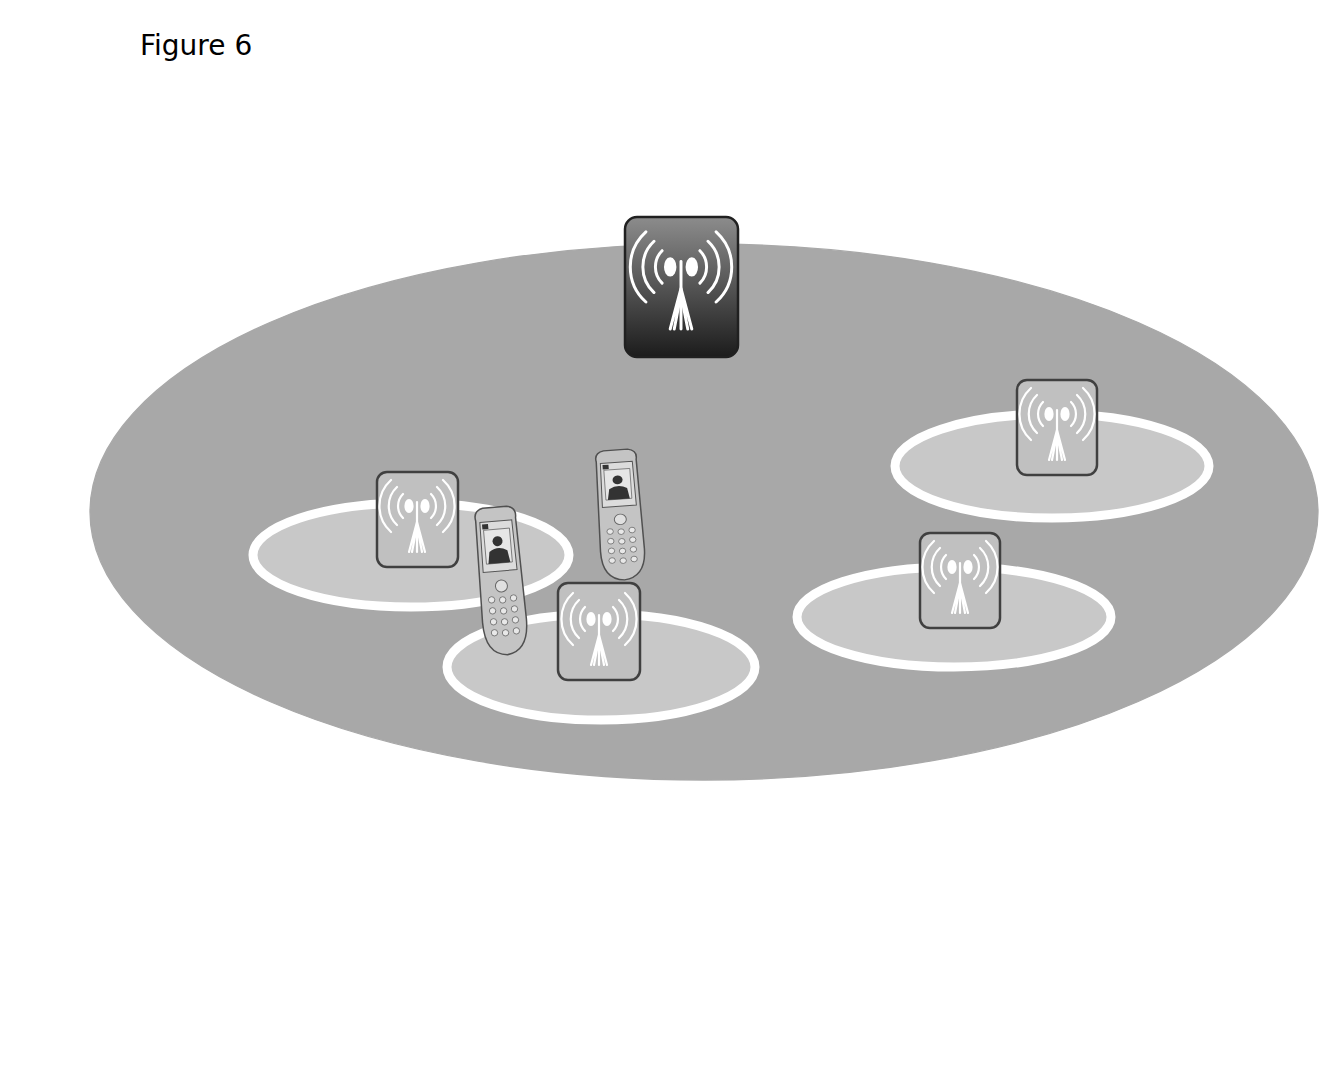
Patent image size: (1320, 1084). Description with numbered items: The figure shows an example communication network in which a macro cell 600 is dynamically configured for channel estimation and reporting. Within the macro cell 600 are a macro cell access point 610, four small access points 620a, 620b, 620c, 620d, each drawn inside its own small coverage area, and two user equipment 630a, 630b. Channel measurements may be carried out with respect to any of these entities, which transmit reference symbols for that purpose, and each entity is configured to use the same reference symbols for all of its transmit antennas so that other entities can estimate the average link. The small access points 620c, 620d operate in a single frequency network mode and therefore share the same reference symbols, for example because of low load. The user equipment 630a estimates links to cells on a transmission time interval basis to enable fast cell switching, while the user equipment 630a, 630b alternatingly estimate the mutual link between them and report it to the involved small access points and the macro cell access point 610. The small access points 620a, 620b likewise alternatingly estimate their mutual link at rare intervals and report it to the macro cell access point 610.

The macro cell 600 is at (248, 312).
The macro cell access point 610 is at (688, 217).
The small access point 620a is at (377, 488).
The small access point 620b is at (643, 606).
The small access point 620c is at (927, 607).
The small access point 620d is at (1097, 395).
The user equipment 630a is at (500, 652).
The user equipment 630b is at (644, 500).